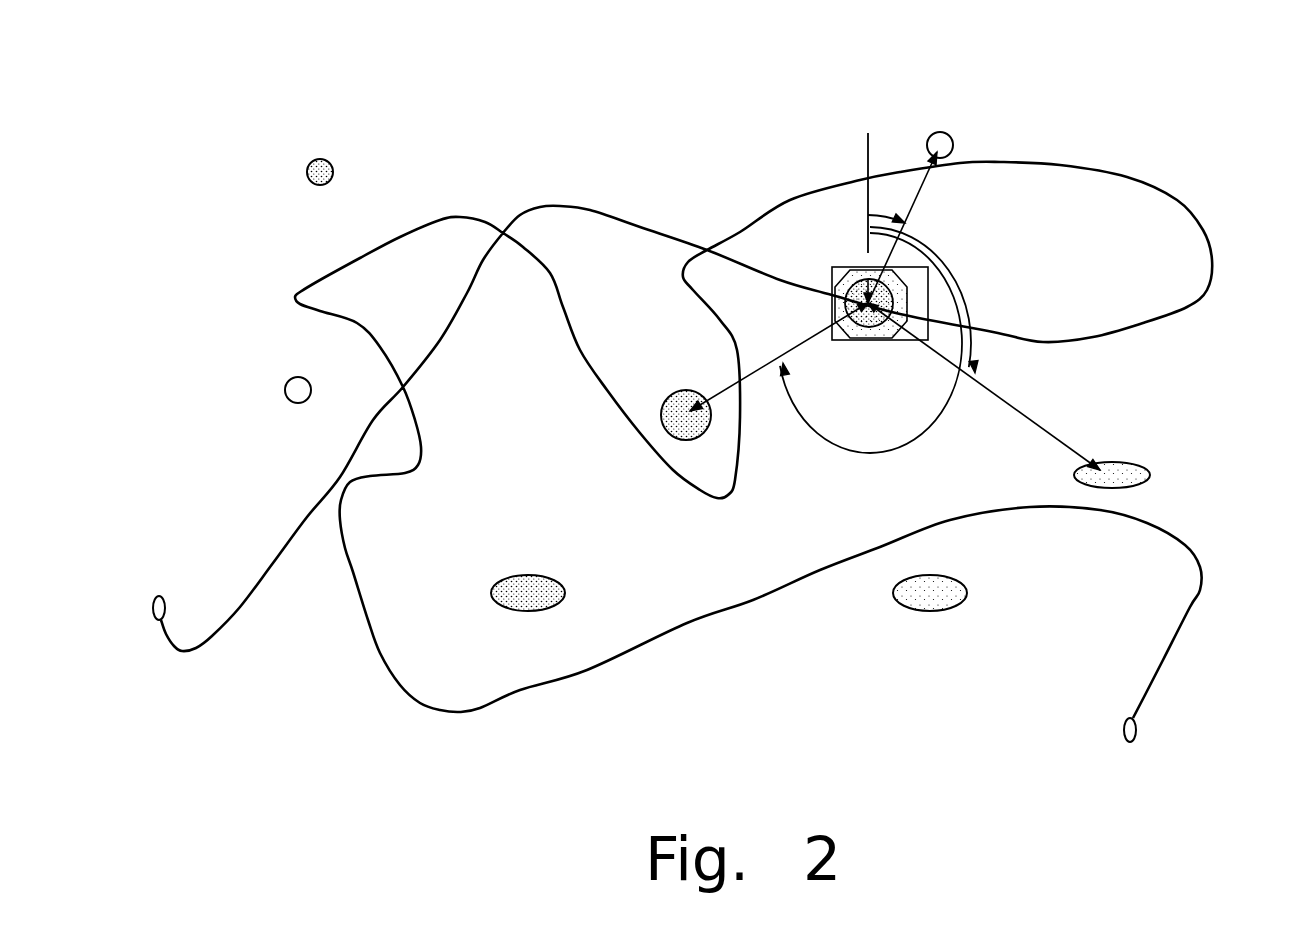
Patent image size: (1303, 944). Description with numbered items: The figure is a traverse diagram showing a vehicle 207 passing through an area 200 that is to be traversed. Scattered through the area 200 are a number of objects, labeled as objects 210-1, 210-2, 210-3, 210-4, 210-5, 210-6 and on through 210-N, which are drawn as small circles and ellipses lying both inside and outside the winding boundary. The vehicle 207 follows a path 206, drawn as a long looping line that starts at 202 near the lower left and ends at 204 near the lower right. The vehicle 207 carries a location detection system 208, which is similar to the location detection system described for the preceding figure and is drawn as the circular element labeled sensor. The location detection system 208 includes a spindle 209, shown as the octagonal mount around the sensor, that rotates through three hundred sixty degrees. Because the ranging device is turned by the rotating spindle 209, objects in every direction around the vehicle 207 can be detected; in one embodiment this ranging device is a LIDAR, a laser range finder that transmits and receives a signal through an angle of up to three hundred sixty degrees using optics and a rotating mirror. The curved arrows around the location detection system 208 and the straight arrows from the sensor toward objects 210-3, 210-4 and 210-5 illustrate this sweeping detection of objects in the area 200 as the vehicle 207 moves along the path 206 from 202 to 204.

The area to be traversed 200 is at (1181, 128).
The path start 202 is at (165, 597).
The path end 204 is at (1134, 742).
The path 206 is at (393, 240).
The vehicle 207 is at (920, 292).
The location detection system 208 is at (845, 302).
The spindle 209 is at (856, 266).
The object 210-1 is at (286, 386).
The object 210-2 is at (318, 158).
The object 210-3 is at (677, 391).
The object 210-4 is at (943, 132).
The object 210-5 is at (1160, 443).
The object 210-6 is at (968, 593).
The object 210-N is at (563, 556).